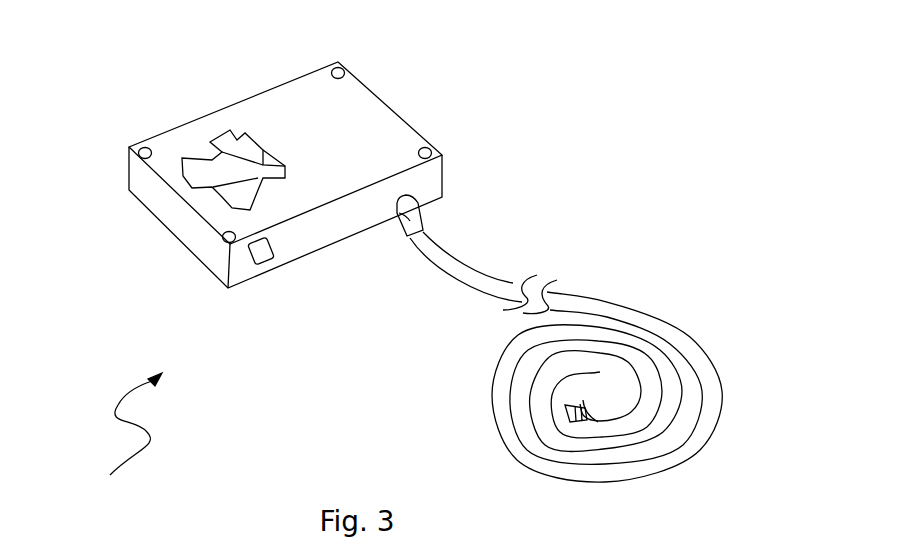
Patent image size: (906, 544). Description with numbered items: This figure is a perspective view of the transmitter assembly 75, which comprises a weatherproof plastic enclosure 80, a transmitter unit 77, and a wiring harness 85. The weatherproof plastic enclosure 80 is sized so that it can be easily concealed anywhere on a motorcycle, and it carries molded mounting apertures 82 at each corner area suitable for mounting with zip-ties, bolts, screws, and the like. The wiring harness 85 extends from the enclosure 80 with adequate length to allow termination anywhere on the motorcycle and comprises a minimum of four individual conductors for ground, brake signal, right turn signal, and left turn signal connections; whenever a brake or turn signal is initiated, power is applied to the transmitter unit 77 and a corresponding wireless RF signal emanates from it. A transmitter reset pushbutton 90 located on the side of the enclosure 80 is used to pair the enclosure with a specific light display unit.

The transmitter assembly 75 is at (122, 434).
The transmitter unit 77 is at (237, 160).
The weatherproof plastic enclosure 80 is at (302, 108).
The molded mounting apertures 82 is at (340, 63).
The wiring harness 85 is at (582, 302).
The transmitter reset pushbutton 90 is at (261, 254).